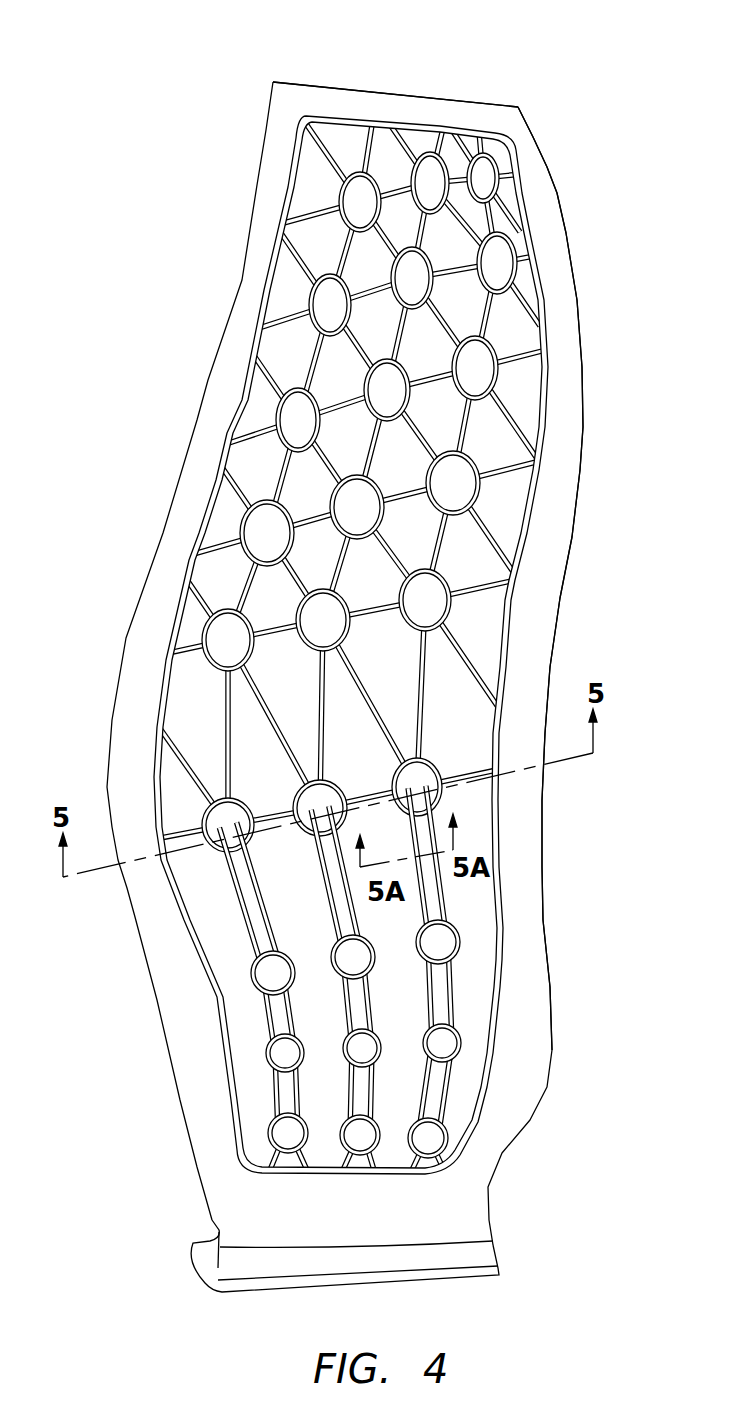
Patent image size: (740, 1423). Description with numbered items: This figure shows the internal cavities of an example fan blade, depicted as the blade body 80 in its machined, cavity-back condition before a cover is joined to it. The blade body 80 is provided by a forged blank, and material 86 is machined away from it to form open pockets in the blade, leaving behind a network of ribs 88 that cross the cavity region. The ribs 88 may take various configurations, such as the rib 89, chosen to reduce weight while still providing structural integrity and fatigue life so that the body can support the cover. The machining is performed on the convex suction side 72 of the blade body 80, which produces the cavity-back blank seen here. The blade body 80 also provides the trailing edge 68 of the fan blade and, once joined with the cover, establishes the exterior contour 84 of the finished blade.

The blade body 80 is at (523, 92).
The exterior contour 84 is at (427, 102).
The trailing edge 68 is at (556, 181).
The material 86 is at (500, 266).
The ribs 88 is at (487, 325).
The rib 89 is at (425, 905).
The convex suction side 72 is at (340, 1240).